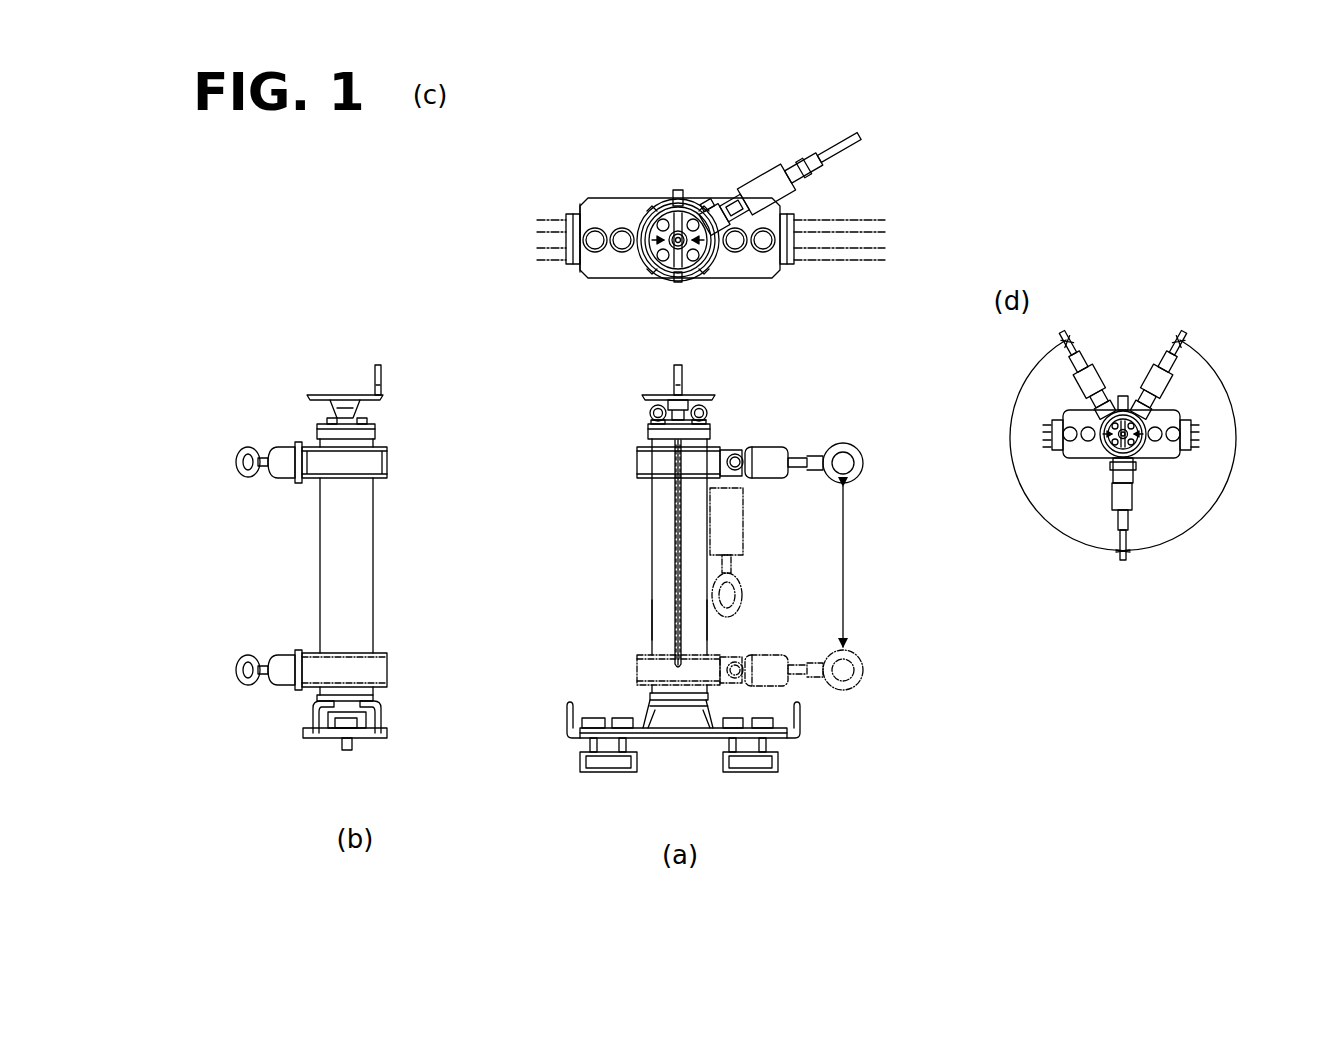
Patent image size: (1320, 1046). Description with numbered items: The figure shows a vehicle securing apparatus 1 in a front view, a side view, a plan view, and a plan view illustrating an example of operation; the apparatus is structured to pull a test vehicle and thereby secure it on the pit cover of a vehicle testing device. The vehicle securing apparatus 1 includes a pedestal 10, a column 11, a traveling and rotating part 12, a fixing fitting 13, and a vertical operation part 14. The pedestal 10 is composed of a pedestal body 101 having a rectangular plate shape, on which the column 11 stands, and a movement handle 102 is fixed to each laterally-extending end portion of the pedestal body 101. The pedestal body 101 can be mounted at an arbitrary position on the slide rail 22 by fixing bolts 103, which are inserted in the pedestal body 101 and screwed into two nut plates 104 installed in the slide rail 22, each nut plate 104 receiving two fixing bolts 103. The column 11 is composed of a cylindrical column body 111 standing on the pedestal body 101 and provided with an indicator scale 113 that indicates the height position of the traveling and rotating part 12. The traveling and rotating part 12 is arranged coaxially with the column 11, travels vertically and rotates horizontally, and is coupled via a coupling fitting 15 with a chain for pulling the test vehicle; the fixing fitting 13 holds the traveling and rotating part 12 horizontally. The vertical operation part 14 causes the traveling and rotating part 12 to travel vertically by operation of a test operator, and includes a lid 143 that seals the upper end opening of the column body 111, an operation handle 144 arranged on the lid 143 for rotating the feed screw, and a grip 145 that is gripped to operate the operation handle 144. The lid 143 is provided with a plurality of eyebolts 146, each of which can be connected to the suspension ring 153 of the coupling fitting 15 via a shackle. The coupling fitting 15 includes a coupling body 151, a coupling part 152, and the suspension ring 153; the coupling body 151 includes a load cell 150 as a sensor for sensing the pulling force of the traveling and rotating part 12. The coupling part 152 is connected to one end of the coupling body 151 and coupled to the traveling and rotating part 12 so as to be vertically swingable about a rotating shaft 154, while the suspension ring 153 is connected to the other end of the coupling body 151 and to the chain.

The vehicle securing apparatus 1 is at (512, 145).
The pedestal 10 is at (592, 197).
The column 11 is at (665, 210).
The traveling and rotating part 12 is at (650, 205).
The fixing fitting 13 is at (678, 190).
The vertical operation part 14 is at (248, 303).
The coupling fitting 15 is at (702, 102).
The slide rail 22 is at (560, 225).
The pedestal body 101 is at (635, 270).
The movement handle 102 is at (575, 245).
The fixing bolt 103 is at (622, 250).
The nut plate 104 is at (580, 760).
The column body 111 is at (652, 612).
The indicator scale 113 is at (675, 573).
The lid 143 is at (648, 432).
The operation handle 144 is at (648, 396).
The grip 145 is at (682, 375).
The eyebolt 146 is at (652, 412).
The load cell 150 is at (783, 177).
The coupling body 151 is at (790, 165).
The coupling part 152 is at (740, 195).
The suspension ring 153 is at (850, 140).
The rotating shaft 154 is at (715, 205).